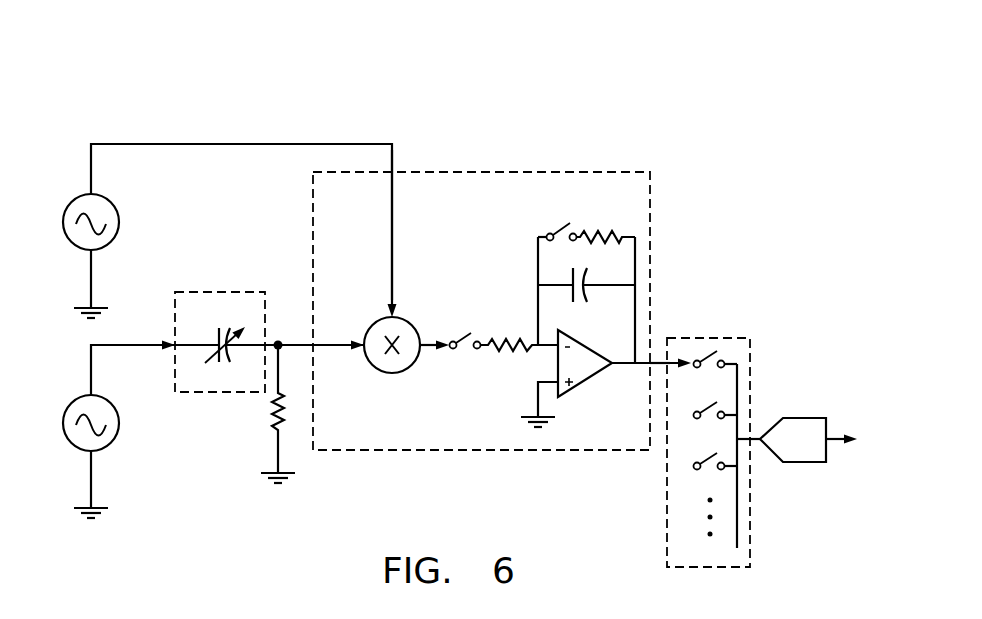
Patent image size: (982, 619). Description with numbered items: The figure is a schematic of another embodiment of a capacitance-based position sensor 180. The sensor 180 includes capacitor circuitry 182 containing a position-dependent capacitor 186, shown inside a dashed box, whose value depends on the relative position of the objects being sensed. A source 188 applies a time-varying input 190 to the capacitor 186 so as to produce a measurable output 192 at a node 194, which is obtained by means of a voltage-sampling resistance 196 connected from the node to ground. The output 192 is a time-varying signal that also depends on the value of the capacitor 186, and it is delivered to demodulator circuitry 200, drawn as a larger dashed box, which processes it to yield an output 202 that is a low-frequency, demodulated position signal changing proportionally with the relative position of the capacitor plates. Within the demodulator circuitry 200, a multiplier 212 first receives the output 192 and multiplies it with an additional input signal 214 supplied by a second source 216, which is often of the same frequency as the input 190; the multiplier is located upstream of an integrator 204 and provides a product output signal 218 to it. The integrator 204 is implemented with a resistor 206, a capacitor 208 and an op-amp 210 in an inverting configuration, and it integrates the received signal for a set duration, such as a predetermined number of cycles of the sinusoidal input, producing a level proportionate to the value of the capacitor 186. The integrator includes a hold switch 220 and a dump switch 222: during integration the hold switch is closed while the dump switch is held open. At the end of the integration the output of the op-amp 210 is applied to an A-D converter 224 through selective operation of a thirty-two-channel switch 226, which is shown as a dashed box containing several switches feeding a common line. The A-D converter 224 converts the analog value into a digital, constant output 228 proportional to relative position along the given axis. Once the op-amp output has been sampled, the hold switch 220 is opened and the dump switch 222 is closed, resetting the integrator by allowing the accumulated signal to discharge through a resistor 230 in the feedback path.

The position sensor 180 is at (628, 70).
The capacitor circuitry 182 is at (203, 299).
The position-dependent capacitor 186 is at (243, 292).
The source 188 is at (75, 398).
The time-varying input 190 is at (157, 360).
The output 192 is at (330, 353).
The node 194 is at (280, 300).
The voltage-sampling resistance 196 is at (265, 417).
The demodulator circuitry 200 is at (610, 172).
The output 202 is at (677, 370).
The integrator 204 is at (512, 270).
The resistor 206 is at (503, 360).
The capacitor 208 is at (598, 272).
The op-amp 210 is at (597, 357).
The multiplier 212 is at (405, 373).
The input signal 214 is at (403, 290).
The source 216 is at (75, 195).
The product output signal 218 is at (428, 357).
The hold switch 220 is at (471, 332).
The dump switch 222 is at (563, 226).
The A-D converter 224 is at (795, 418).
The 32-channel switch 226 is at (750, 338).
The digital constant output 228 is at (828, 448).
The resistor 230 is at (612, 225).